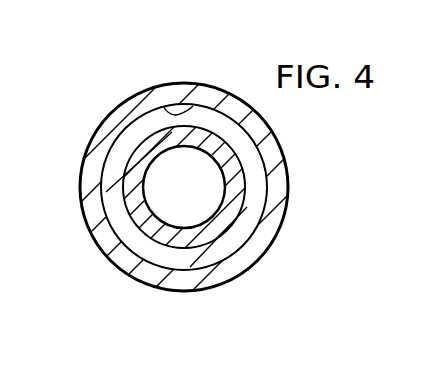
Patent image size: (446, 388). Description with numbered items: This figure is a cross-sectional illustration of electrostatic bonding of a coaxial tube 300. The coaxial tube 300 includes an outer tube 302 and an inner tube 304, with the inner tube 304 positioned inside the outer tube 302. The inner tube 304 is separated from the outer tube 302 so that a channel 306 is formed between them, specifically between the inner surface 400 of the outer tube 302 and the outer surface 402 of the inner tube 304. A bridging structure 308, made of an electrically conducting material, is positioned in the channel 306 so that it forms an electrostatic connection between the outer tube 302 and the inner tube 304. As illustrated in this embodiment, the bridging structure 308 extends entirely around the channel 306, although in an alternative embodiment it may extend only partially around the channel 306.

The coaxial tube 300 is at (110, 63).
The outer tube 302 is at (195, 290).
The inner tube 304 is at (180, 138).
The channel 306 is at (123, 123).
The bridging structure 308 is at (236, 238).
The inner surface 400 is at (193, 102).
The outer surface 402 is at (259, 212).